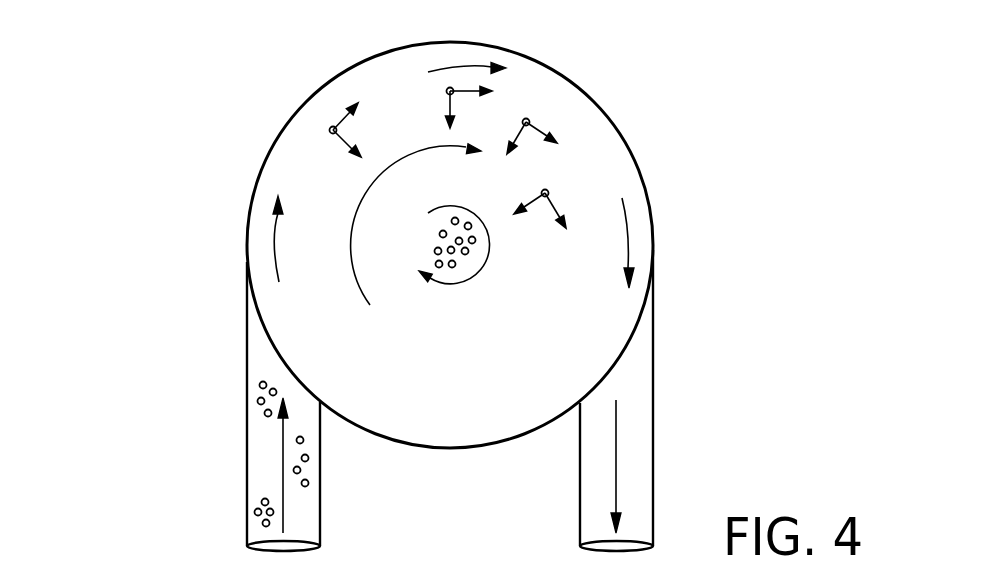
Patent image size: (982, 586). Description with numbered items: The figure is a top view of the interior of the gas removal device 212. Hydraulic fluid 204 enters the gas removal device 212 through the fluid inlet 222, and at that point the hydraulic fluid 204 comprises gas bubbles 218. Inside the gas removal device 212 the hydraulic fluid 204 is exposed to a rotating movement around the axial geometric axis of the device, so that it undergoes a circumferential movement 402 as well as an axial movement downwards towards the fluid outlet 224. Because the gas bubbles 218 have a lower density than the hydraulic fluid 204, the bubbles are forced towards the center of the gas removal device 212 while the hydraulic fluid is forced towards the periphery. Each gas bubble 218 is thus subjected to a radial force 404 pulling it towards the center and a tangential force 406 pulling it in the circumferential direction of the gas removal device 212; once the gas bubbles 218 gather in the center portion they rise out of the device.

The gas removal device 212 is at (672, 152).
The hydraulic fluid 204 is at (282, 485).
The gas bubbles 218 is at (329, 130).
The fluid inlet 222 is at (283, 548).
The fluid outlet 224 is at (614, 548).
The circumferential movement 402 is at (629, 232).
The radial force 404 is at (345, 137).
The tangential force 406 is at (343, 122).